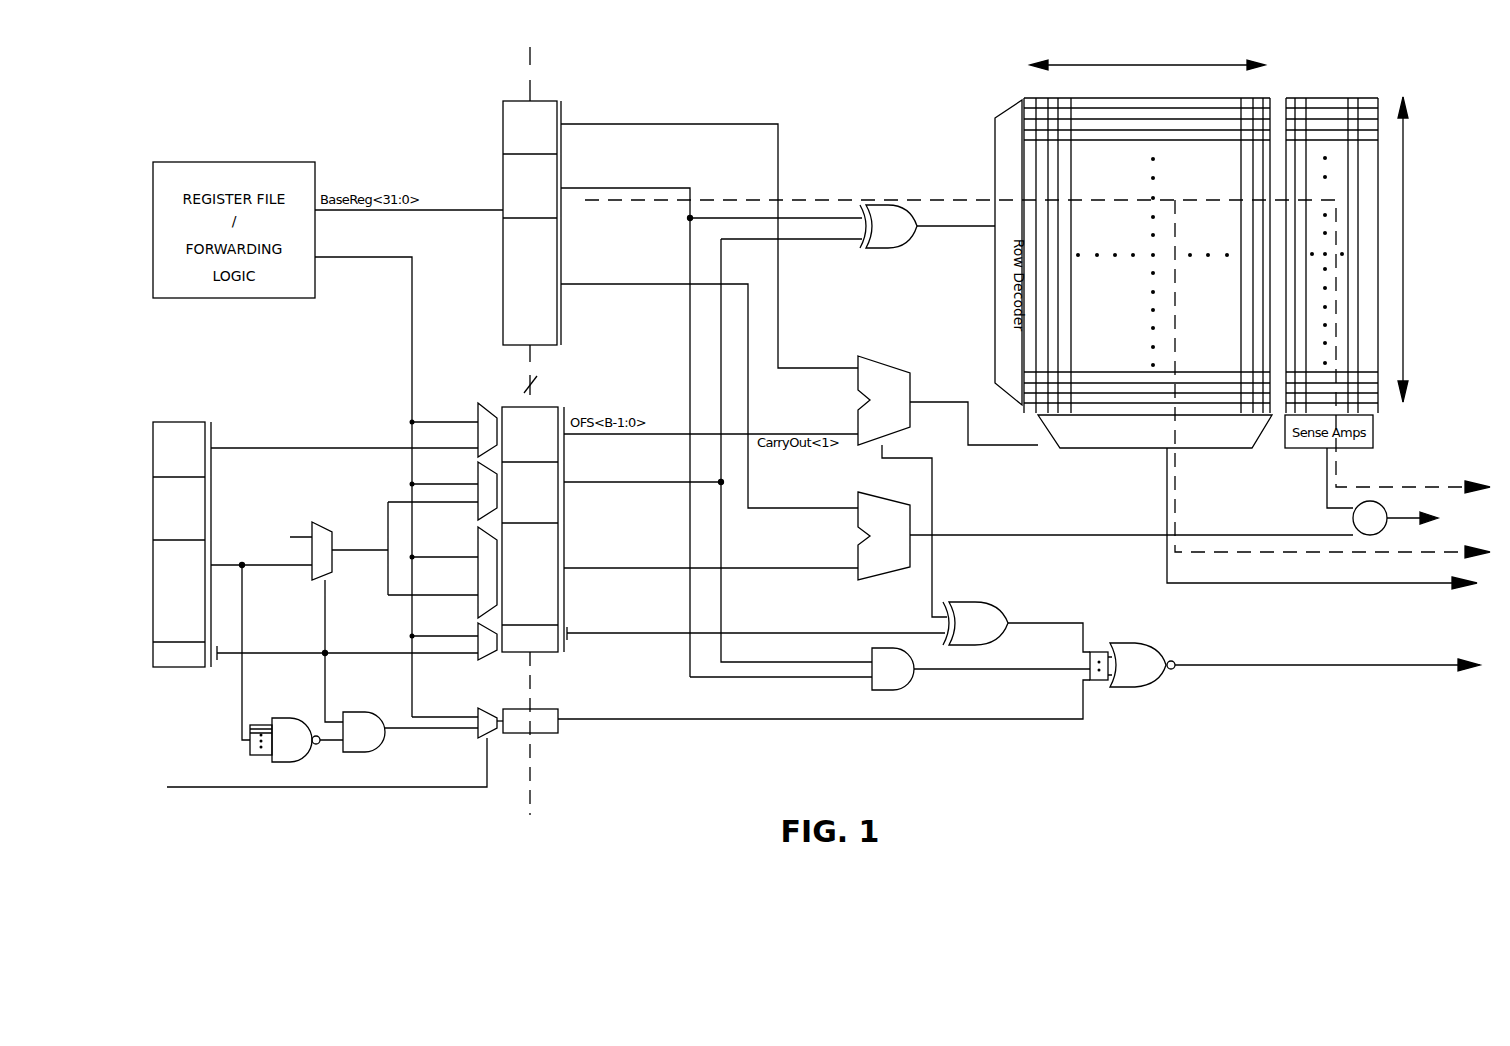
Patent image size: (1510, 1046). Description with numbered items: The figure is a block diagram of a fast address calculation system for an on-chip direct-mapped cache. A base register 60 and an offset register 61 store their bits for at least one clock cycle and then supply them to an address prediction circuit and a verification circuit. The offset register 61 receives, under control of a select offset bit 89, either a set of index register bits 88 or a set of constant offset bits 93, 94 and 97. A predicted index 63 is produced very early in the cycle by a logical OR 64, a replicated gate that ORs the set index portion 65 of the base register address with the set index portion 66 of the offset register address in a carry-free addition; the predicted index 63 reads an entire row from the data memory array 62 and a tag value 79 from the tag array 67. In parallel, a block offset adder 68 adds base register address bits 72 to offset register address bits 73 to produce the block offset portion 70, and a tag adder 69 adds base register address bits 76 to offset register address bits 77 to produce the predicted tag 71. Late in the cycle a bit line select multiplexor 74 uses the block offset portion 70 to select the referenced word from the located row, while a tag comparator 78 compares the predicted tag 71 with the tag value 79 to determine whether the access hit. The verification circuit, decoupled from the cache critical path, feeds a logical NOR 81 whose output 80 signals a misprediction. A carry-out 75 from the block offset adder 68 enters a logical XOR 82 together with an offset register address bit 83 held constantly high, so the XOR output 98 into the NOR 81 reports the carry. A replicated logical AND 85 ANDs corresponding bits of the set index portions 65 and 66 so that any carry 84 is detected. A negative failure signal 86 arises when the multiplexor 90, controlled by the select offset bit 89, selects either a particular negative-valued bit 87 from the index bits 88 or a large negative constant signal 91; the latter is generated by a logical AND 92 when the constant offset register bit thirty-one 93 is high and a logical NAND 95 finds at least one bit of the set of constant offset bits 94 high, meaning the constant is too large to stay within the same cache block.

The base register 60 is at (503, 101).
The offset register 61 is at (500, 405).
The data memory array 62 is at (1120, 64).
The predicted index 63 is at (945, 222).
The logical OR 64 is at (870, 208).
The set index portion of the base register address 65 is at (712, 190).
The set index portion of the offset register address 66 is at (628, 484).
The tag array 67 is at (1325, 70).
The block offset adder 68 is at (868, 356).
The tag adder 69 is at (887, 580).
The block offset portion 70 is at (947, 400).
The predicted tag 71 is at (950, 533).
The base register address bits 72 is at (690, 124).
The offset register address bits 73 is at (718, 368).
The multiplexor 74 is at (1115, 450).
The carry-out 75 is at (912, 455).
The base register address bits 76 is at (640, 290).
The offset register address bits 77 is at (680, 568).
The tag comparator 78 is at (1380, 503).
The tag value 79 is at (1330, 475).
The verification circuit output 80 is at (1322, 668).
The logical NOR 81 is at (1142, 683).
The logical XOR 82 is at (945, 605).
The offset register address bit 83 is at (620, 641).
The carry 84 is at (948, 670).
The logical AND 85 is at (887, 690).
The negative failure signal 86 is at (1085, 718).
The index register bit 87 is at (425, 637).
The set of index bits 88 is at (371, 272).
The select offset bit 89 is at (428, 790).
The multiplexor 90 is at (493, 735).
The large negative constant signal 91 is at (410, 727).
The logical AND 92 is at (357, 712).
The constant offset register sign bit 93 is at (230, 660).
The set of constant offset bits 94 is at (225, 562).
The logical NAND 95 is at (290, 718).
The constant offset bits 97 is at (215, 440).
The logical XOR output 98 is at (1133, 598).